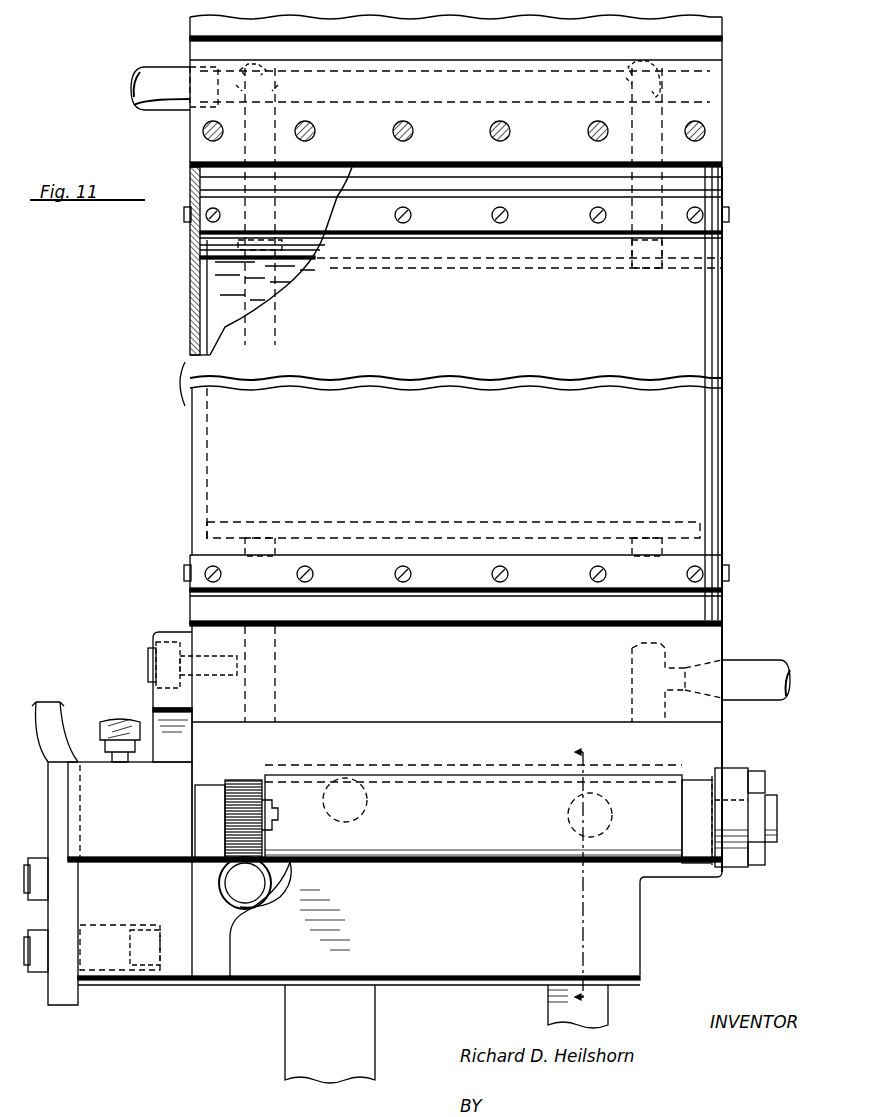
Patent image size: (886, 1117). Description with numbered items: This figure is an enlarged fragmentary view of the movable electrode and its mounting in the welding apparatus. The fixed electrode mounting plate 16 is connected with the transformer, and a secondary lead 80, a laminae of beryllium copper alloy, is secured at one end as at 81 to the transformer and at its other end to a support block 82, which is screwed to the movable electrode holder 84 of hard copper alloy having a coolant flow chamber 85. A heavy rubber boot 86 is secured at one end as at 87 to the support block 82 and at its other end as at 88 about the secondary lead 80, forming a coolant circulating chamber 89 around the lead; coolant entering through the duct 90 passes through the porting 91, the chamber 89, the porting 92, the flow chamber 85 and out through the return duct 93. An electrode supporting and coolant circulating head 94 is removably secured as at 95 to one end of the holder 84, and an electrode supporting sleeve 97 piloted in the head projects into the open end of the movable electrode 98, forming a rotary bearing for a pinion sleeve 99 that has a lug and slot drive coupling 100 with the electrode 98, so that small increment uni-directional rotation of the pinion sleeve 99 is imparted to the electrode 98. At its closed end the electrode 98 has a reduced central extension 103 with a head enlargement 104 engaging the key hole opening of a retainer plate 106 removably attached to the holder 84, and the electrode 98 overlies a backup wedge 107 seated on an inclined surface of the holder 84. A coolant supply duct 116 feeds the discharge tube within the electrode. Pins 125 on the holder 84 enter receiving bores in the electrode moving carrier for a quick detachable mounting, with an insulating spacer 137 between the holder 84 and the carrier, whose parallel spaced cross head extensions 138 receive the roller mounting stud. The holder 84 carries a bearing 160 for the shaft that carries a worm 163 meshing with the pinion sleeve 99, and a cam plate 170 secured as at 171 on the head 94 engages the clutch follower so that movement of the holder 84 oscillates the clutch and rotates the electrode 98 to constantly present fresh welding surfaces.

The fixed electrode mounting plate 16 is at (587, 874).
The secondary lead 80 is at (205, 333).
The securing point of secondary lead to transformer 81 is at (490, 130).
The support block 82 is at (210, 640).
The movable electrode holder 84 is at (222, 735).
The coolant flow chamber 85 is at (408, 745).
The rubber boot 86 is at (210, 440).
The boot securing point on support block 87 is at (462, 578).
The boot securing point about secondary lead 88 is at (184, 218).
The coolant circulating chamber 89 is at (205, 298).
The duct 90 is at (166, 102).
The porting 91 is at (268, 126).
The porting 92 is at (280, 690).
The return duct 93 is at (760, 680).
The electrode supporting and coolant circulating head 94 is at (112, 955).
The securing means of head to holder 95 is at (148, 662).
The electrode supporting sleeve 97 is at (208, 795).
The movable electrode 98 is at (490, 790).
The pinion sleeve 99 is at (240, 790).
The lug and slot drive coupling 100 is at (278, 818).
The reduced central extension 103 is at (755, 778).
The head enlargement 104 is at (767, 842).
The retainer plate 106 is at (735, 800).
The backup wedge 107 is at (690, 782).
The coolant supply duct 116 is at (112, 718).
The pins 125 is at (360, 806).
The insulating spacer 137 is at (485, 982).
The cross head extensions 138 is at (287, 1052).
The bearing 160 is at (222, 912).
The worm 163 is at (232, 882).
The cam plate 170 is at (50, 705).
The securing means of cam plate to head 171 is at (40, 945).